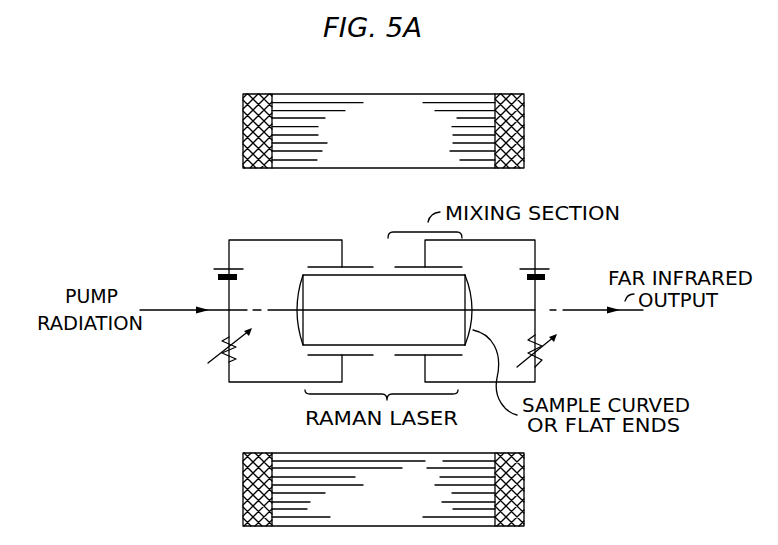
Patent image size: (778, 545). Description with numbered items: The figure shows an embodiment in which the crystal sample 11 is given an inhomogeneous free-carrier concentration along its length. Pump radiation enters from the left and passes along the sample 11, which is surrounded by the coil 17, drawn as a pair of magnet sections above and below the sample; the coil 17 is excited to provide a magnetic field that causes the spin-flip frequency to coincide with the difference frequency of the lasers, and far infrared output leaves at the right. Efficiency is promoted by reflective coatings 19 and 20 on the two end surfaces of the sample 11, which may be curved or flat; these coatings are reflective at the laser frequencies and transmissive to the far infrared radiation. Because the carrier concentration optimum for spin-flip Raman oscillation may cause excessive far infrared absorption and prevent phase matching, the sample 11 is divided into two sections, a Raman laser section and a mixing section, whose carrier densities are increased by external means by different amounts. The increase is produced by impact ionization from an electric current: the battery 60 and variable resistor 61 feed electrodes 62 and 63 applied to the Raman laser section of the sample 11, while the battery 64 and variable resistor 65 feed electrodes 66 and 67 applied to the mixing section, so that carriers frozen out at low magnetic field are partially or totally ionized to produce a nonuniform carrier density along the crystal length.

The coil 17 is at (524, 135).
The battery 60 is at (217, 276).
The variable resistor 61 is at (217, 343).
The electrode 62 is at (312, 267).
The electrode 63 is at (320, 356).
The reflective coating 19 is at (297, 289).
The reflective coating 20 is at (476, 287).
The sample 11 is at (382, 275).
The electrode 66 is at (449, 267).
The electrode 67 is at (445, 356).
The battery 64 is at (544, 269).
The variable resistor 65 is at (546, 355).